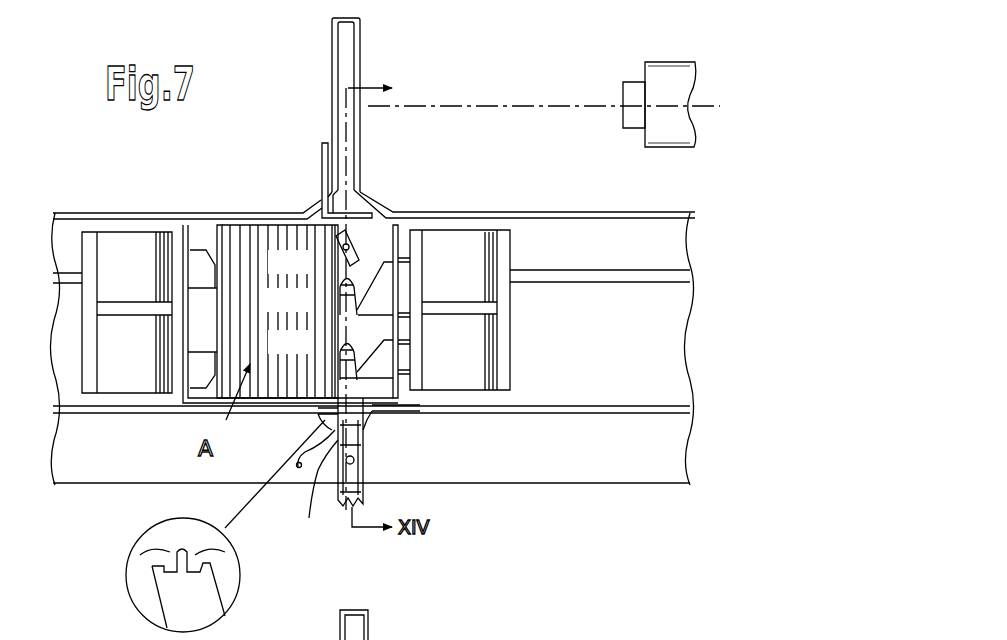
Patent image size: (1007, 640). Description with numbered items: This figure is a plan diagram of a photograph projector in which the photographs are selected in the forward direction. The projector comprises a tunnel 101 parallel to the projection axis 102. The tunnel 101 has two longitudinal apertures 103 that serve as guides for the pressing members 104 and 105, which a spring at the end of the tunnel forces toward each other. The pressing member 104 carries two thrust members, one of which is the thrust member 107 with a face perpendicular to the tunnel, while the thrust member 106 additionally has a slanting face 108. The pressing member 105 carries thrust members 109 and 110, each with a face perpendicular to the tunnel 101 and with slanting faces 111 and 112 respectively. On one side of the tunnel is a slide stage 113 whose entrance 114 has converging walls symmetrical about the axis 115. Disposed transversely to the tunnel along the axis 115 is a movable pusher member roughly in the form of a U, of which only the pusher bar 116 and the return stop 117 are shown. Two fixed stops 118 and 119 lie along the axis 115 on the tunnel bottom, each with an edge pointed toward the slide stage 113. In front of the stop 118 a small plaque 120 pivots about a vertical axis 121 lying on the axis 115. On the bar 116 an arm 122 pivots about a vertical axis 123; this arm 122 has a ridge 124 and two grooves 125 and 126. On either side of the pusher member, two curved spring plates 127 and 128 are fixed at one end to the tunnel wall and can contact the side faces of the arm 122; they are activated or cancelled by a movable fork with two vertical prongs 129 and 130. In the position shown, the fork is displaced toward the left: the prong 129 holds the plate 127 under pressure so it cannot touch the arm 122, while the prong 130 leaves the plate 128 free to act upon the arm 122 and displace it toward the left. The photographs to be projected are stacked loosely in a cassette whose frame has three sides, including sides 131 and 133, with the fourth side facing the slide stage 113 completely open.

The tunnel 101 is at (612, 398).
The projection axis 102 is at (470, 106).
The longitudinal apertures 103 is at (63, 272).
The pressing member 104 is at (127, 321).
The pressing member 105 is at (455, 282).
The thrust member 106 is at (193, 254).
The thrust member 107 is at (273, 314).
The slanting face 108 is at (208, 252).
The thrust member 109 is at (400, 230).
The thrust member 110 is at (402, 372).
The slanting face 111 is at (360, 264).
The slanting face 112 is at (360, 360).
The slide stage 113 is at (486, 118).
The entrance 114 is at (388, 203).
The axis 115 is at (340, 58).
The pusher bar 116 is at (402, 489).
The return stop 117 is at (349, 210).
The fixed stop 118 is at (352, 292).
The fixed stop 119 is at (350, 356).
The small plaque 120 is at (300, 214).
The vertical axis 121 is at (340, 258).
The arm 122 is at (325, 420).
The vertical axis 123 is at (373, 470).
The ridge 124 is at (178, 548).
The groove 125 is at (165, 566).
The groove 126 is at (228, 565).
The spring plate 127 is at (300, 470).
The spring plate 128 is at (376, 462).
The prong 129 is at (332, 455).
The prong 130 is at (360, 432).
The cassette frame side 131 is at (170, 258).
The cassette frame side 133 is at (400, 288).